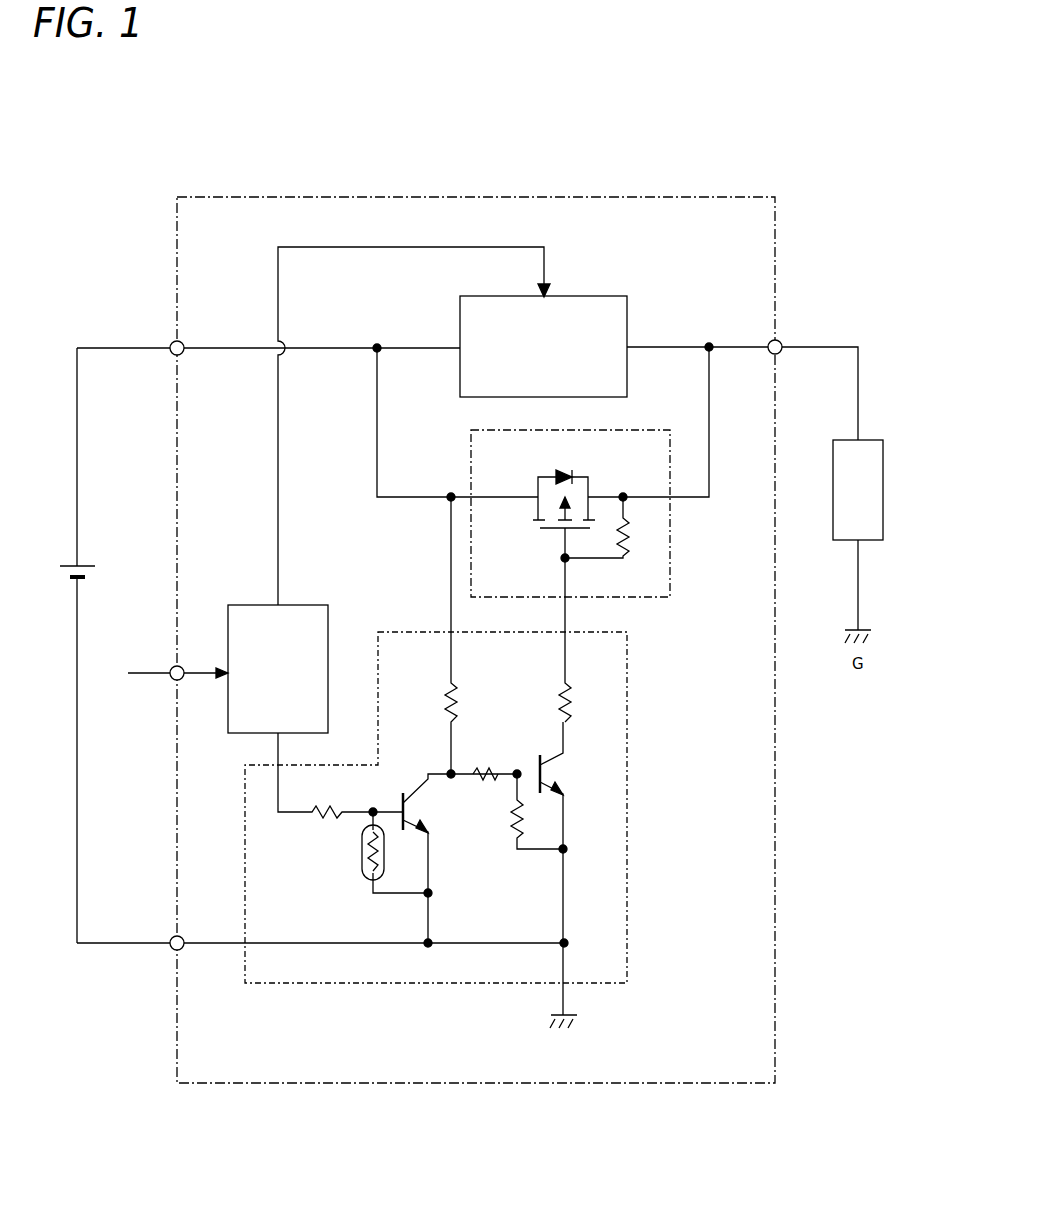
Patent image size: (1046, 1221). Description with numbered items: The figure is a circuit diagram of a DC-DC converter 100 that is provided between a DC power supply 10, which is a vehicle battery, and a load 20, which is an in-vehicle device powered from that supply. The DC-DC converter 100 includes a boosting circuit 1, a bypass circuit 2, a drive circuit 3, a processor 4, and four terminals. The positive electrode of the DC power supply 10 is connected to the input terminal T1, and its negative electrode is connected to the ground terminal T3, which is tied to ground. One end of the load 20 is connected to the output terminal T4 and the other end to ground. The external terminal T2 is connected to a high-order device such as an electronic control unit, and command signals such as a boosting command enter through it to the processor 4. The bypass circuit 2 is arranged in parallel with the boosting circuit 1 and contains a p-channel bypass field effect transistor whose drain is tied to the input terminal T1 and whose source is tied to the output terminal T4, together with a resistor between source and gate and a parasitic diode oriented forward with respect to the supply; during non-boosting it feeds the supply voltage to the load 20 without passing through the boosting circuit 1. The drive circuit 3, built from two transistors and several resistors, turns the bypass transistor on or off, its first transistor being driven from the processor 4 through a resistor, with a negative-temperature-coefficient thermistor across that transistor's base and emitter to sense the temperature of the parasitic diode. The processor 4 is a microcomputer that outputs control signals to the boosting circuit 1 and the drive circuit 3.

The DC-DC converter 100 is at (531, 197).
The boosting circuit 1 is at (588, 296).
The bypass circuit 2 is at (645, 430).
The drive circuit 3 is at (627, 830).
The CPU 4 is at (305, 605).
The DC power supply 10 is at (97, 572).
The load 20 is at (833, 493).
The input terminal T1 is at (184, 346).
The external terminal T2 is at (177, 671).
The ground terminal T3 is at (177, 941).
The output terminal T4 is at (779, 340).